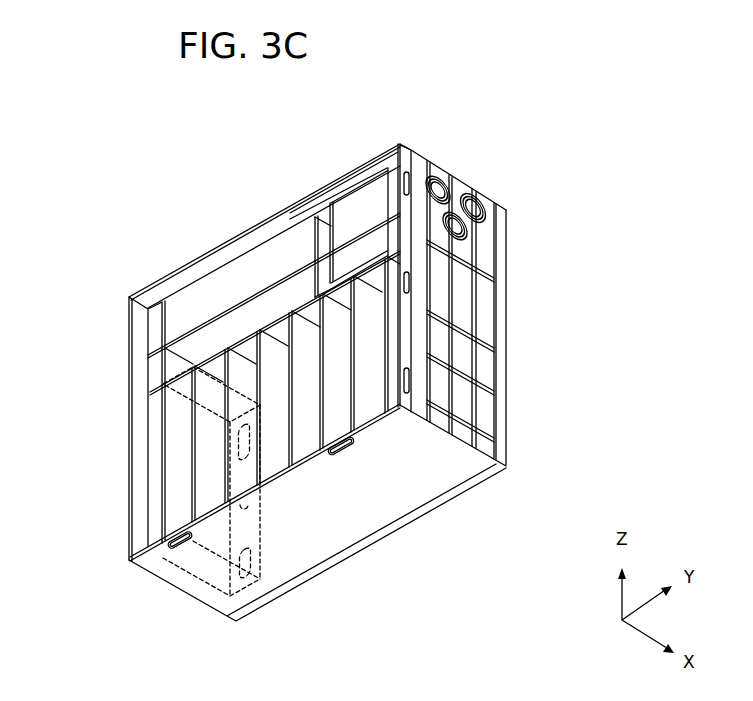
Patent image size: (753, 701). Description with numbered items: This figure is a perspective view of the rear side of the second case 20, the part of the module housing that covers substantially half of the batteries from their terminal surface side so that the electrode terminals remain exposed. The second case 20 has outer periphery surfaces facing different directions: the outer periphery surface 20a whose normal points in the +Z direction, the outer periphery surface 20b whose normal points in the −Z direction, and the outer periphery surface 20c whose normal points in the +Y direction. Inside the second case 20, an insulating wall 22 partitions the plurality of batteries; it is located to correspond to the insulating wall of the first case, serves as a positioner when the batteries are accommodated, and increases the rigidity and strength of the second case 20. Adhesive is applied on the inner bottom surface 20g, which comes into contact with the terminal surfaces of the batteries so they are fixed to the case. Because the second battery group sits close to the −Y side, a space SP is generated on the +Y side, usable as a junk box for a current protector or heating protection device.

The second case 20 is at (70, 186).
The outer periphery surface 20a is at (286, 212).
The outer periphery surface 20b is at (406, 484).
The outer periphery surface 20c is at (466, 357).
The inner bottom surface 20g is at (252, 592).
The insulating wall 22 is at (190, 306).
The space SP is at (378, 217).